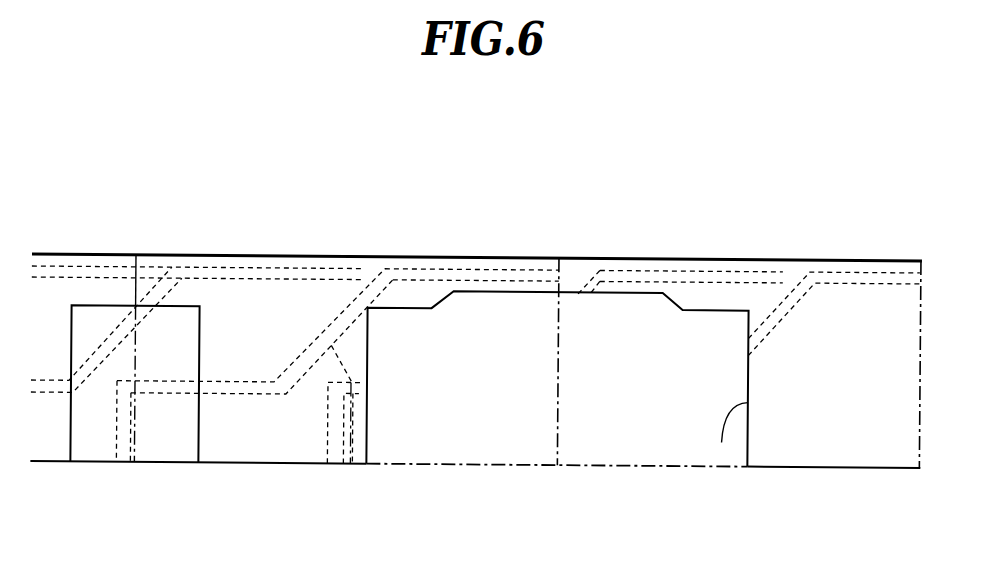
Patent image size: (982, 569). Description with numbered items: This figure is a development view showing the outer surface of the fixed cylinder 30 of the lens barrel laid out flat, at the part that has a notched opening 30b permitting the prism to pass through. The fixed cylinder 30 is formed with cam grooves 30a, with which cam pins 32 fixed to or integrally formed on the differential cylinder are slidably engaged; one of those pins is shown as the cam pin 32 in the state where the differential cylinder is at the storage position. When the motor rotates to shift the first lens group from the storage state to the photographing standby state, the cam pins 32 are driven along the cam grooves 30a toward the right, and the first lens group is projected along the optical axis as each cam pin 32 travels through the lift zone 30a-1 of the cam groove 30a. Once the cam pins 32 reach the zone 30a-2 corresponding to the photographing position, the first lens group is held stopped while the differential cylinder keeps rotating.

The fixed cylinder 30 is at (316, 237).
The cam groove 30a is at (221, 267).
The lift zone 30a-1 is at (352, 463).
The zone corresponding to the photographing position 30a-2 is at (430, 273).
The notched opening 30b is at (723, 443).
The cam pin 32 is at (137, 392).